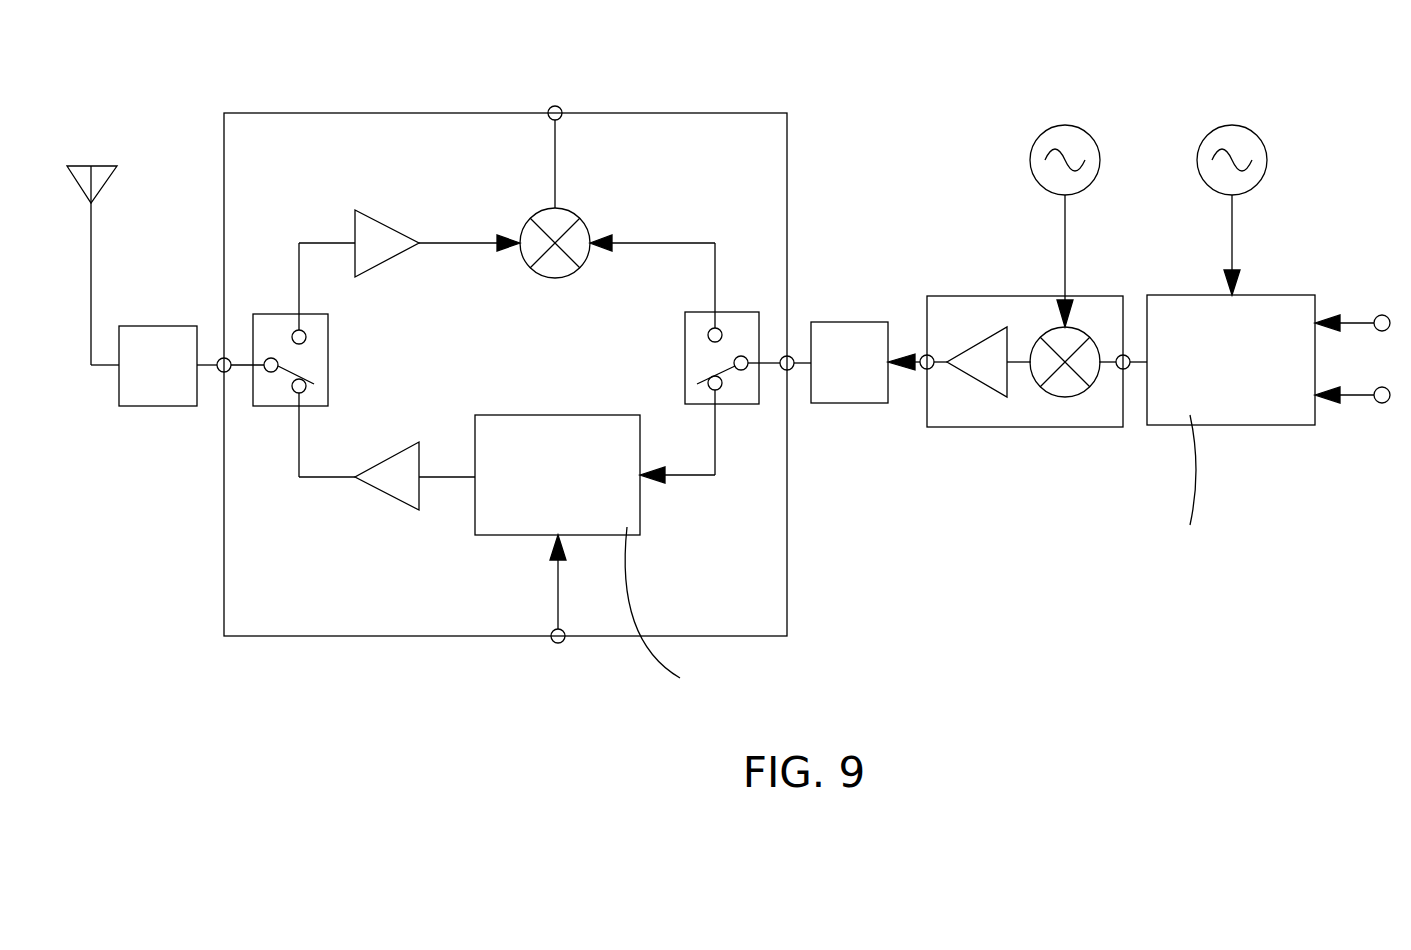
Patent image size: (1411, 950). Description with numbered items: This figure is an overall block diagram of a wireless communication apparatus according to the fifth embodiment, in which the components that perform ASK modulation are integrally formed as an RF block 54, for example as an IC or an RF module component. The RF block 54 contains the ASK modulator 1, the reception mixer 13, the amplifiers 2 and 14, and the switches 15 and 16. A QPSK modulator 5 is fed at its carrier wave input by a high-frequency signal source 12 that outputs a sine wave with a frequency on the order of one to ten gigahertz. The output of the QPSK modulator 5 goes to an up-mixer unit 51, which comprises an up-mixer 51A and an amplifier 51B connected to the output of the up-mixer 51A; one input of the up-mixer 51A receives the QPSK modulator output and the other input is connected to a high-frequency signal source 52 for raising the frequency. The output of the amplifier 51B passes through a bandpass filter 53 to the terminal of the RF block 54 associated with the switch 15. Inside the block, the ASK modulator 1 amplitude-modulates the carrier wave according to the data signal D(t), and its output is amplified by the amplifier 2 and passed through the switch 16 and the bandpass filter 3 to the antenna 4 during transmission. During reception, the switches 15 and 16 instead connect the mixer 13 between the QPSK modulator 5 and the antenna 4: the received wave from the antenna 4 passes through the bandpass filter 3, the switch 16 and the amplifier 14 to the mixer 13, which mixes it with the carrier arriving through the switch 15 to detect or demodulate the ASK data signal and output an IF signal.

The ASK modulator 1 is at (490, 535).
The amplifier 2 is at (387, 494).
The bandpass filter 3 is at (157, 406).
The antenna 4 is at (93, 232).
The QPSK modulator 5 is at (1241, 425).
The high-frequency signal source 12 is at (1267, 160).
The mixer 13 is at (563, 210).
The amplifier 14 is at (391, 228).
The switch 15 is at (738, 404).
The switch 16 is at (262, 314).
The up-mixer unit 51 is at (1032, 427).
The up-mixer 51A is at (1084, 297).
The amplifier 51B is at (974, 296).
The high-frequency signal source 52 is at (1030, 160).
The bandpass filter 53 is at (849, 322).
The RF block 54 is at (747, 113).